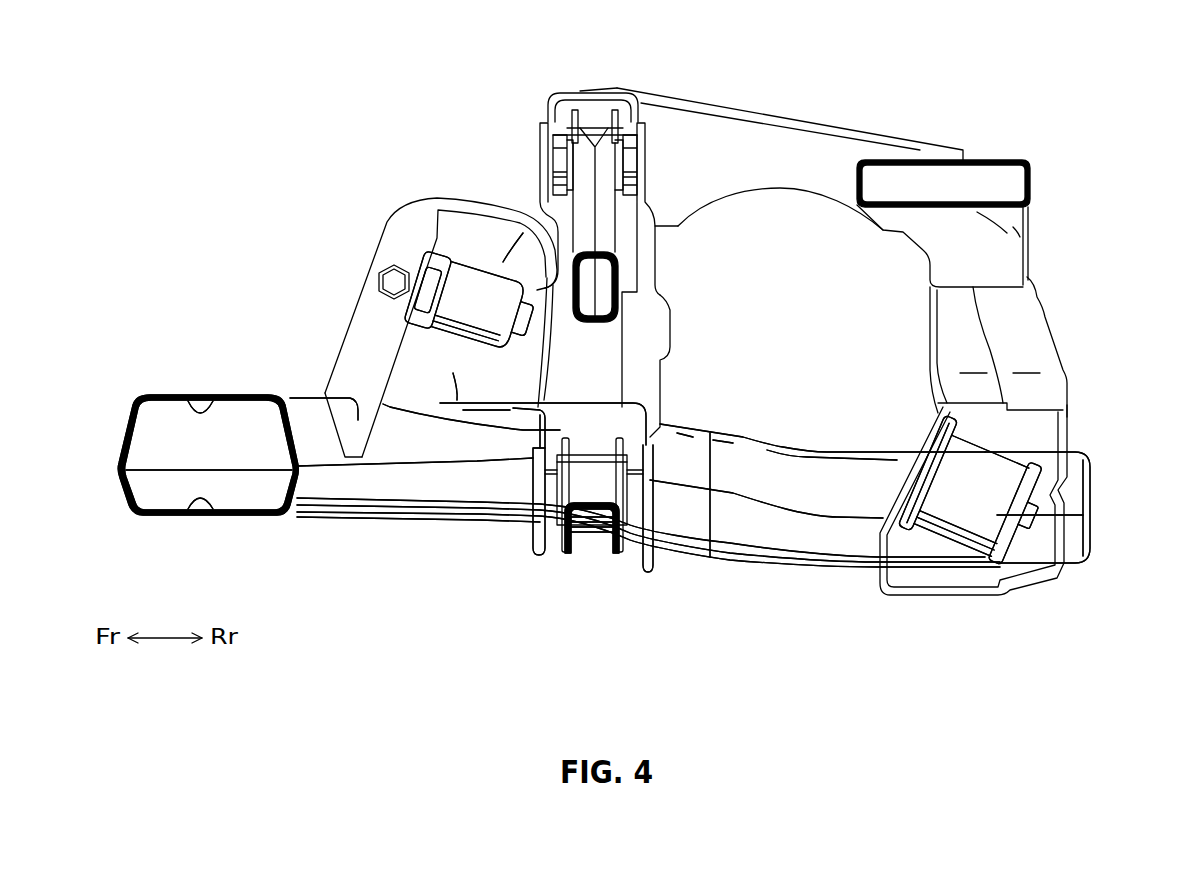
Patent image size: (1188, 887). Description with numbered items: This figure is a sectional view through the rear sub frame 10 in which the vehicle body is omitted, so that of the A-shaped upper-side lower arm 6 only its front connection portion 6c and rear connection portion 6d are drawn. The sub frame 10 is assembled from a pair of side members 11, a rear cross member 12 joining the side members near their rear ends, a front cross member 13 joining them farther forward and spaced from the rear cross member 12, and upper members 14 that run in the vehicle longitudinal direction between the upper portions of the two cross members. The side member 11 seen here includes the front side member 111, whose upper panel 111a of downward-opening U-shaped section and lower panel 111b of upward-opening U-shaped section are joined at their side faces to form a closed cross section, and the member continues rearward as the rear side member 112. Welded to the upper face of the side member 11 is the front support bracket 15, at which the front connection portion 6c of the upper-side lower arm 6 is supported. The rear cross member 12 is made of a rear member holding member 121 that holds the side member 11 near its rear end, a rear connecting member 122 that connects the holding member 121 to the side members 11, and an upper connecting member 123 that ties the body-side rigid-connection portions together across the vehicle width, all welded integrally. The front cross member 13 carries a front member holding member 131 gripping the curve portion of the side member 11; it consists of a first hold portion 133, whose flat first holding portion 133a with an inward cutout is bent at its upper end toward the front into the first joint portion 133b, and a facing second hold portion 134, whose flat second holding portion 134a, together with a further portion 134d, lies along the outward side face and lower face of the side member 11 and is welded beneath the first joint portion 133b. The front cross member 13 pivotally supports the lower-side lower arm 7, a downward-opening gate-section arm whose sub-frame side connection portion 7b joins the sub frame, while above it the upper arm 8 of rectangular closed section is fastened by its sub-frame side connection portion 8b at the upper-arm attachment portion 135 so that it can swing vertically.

The rear sub frame 10 is at (380, 143).
The side member 11 is at (782, 562).
The front side member 111 is at (360, 520).
The upper panel 111a is at (183, 394).
The lower panel 111b is at (192, 512).
The rear end portion of tube 112 is at (1072, 566).
The rear cross member 12 is at (1052, 338).
The rear member holding member 121 is at (1067, 423).
The rear connecting member 122 is at (947, 352).
The upper connecting member 123 is at (1030, 248).
The front cross member 13 is at (550, 105).
The front member holding member 131 is at (658, 455).
The first hold portion 133 is at (625, 524).
The first holding portion 133a is at (645, 565).
The first joint portion 133b is at (592, 410).
The second hold portion 134 is at (448, 526).
The second holding portion 134a is at (537, 493).
The support bracket wall 134d is at (522, 410).
The upper-arm attachment portion 135 is at (570, 92).
The upper member 14 is at (842, 124).
The front support bracket 15 is at (350, 313).
The upper-side lower arm 6 is at (731, 408).
The front connection portion 6c is at (463, 253).
The rear connection portion 6d is at (933, 535).
The lower-side lower arm 7 is at (563, 556).
The sub-frame side connection portion 7b is at (607, 468).
The upper arm 8 is at (622, 239).
The sub-frame side connection portion 8b is at (612, 153).